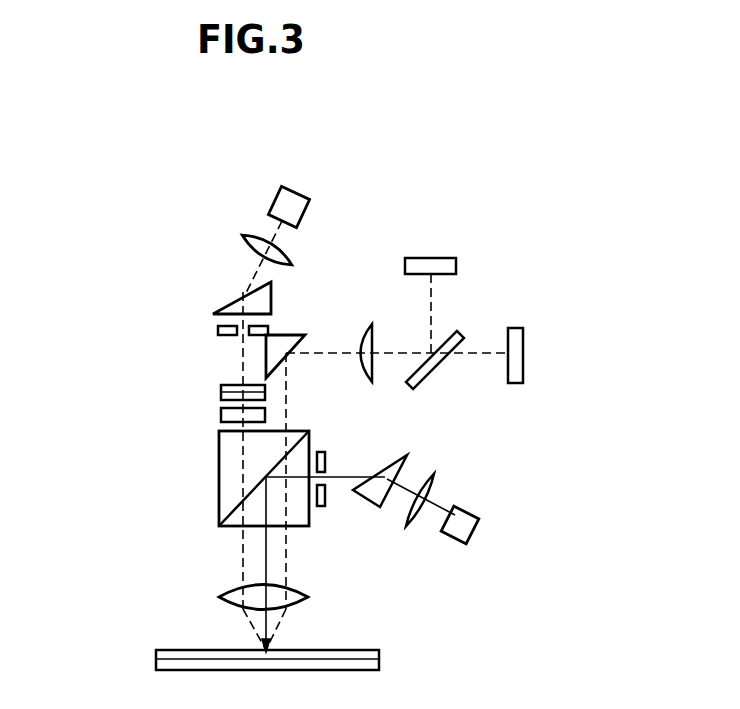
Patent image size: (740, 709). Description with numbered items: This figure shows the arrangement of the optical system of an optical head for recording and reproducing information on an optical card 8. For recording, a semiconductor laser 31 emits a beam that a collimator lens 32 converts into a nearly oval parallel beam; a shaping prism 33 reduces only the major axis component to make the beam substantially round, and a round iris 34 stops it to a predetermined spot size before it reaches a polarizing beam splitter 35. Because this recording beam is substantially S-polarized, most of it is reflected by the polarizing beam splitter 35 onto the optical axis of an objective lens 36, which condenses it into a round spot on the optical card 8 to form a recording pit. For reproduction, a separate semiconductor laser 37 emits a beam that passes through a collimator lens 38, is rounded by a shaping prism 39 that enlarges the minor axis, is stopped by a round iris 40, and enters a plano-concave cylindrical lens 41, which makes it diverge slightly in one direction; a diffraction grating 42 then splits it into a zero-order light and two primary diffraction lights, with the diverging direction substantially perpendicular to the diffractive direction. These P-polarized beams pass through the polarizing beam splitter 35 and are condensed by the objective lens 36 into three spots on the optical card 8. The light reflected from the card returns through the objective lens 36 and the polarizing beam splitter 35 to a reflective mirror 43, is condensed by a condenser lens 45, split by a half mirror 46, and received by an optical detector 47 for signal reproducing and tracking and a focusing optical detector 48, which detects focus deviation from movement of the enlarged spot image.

The optical card 8 is at (188, 650).
The semiconductor laser 31 is at (477, 512).
The collimator lens 32 is at (433, 482).
The shaping prism 33 is at (402, 457).
The round iris 34 is at (328, 457).
The polarizing beam splitter 35 is at (219, 458).
The objective lens 36 is at (232, 592).
The semiconductor laser 37 is at (275, 190).
The collimator lens 38 is at (243, 235).
The shaping prism 39 is at (233, 300).
The round iris 40 is at (216, 330).
The plano-concave cylindrical lens 41 is at (221, 386).
The diffraction grating 42 is at (221, 415).
The reflective mirror 43 is at (292, 335).
The condenser lens 45 is at (363, 327).
The half mirror 46 is at (455, 335).
The optical detector 47 is at (525, 336).
The focusing optical detector 48 is at (443, 258).